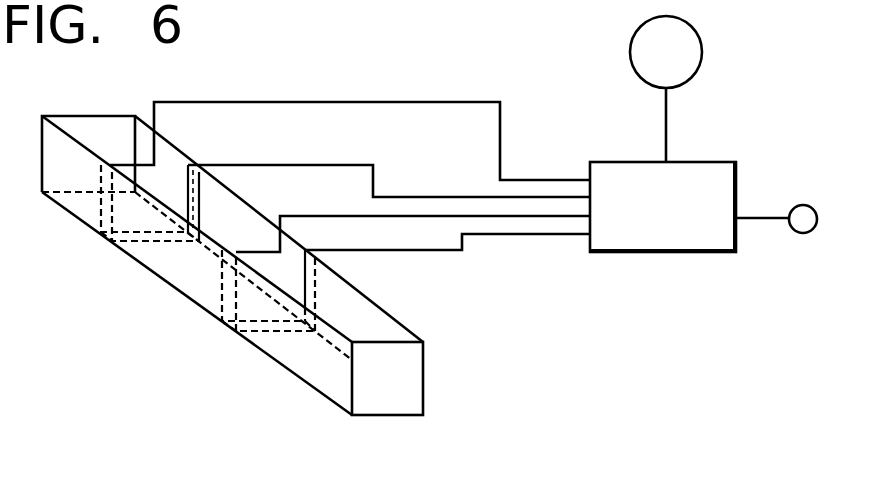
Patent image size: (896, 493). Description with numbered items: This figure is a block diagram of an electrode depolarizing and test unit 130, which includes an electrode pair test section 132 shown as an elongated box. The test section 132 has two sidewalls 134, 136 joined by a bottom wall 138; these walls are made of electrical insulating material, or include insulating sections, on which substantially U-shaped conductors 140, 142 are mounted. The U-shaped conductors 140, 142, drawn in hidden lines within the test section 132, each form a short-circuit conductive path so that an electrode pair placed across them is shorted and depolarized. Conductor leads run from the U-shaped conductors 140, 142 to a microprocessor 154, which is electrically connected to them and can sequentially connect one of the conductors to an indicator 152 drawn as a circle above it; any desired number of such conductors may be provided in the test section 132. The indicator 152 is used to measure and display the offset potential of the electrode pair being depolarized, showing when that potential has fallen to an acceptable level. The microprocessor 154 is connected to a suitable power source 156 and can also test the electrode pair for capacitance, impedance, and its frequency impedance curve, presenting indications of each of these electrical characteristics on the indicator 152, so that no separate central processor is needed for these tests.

The electrode depolarizing and test unit 130 is at (572, 331).
The electrode pair test section 132 is at (413, 395).
The sidewall 134 is at (80, 144).
The sidewall 136 is at (387, 311).
The bottom wall 138 is at (300, 357).
The U-shaped conductor 140 is at (255, 333).
The U-shaped conductor 142 is at (133, 240).
The indicator 152 is at (694, 57).
The microprocessor 154 is at (738, 244).
The power source 156 is at (777, 218).